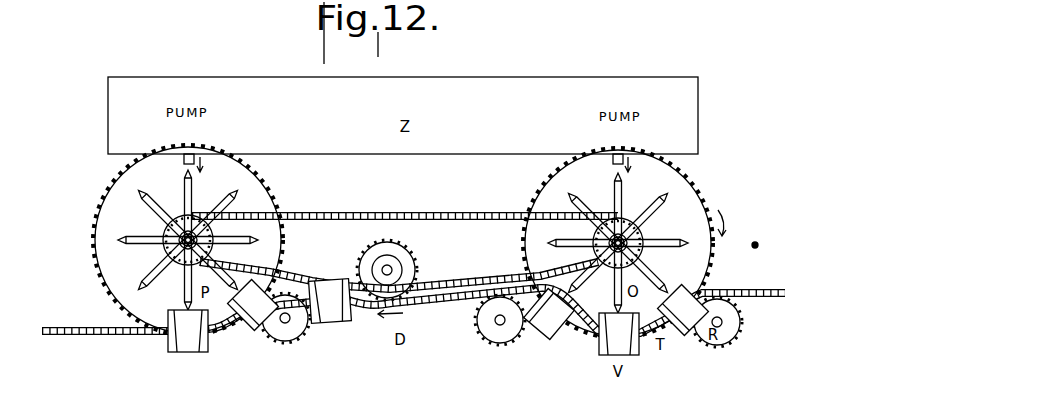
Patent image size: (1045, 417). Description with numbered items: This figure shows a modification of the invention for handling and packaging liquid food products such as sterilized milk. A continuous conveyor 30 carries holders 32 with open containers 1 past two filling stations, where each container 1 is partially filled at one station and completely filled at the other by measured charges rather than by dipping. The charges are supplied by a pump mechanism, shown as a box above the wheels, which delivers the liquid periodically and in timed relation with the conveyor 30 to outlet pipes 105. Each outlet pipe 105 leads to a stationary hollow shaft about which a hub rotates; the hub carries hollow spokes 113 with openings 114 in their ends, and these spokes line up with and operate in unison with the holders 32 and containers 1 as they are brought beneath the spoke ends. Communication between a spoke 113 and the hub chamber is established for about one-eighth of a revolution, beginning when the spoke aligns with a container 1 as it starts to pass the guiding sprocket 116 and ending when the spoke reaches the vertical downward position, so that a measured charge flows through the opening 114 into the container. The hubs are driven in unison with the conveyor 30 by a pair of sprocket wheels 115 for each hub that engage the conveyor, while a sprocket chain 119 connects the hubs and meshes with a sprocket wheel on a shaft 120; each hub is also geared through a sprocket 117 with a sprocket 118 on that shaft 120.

The container 1 is at (188, 340).
The continuous conveyor 30 is at (112, 333).
The holder 32 is at (214, 344).
The outlet pipe 105 is at (182, 161).
The hollow spoke 113 is at (194, 191).
The opening 114 is at (228, 202).
The sprocket wheel 115 is at (106, 220).
The guiding sprocket 116 is at (268, 342).
The sprocket 117 is at (393, 243).
The sprocket 118 is at (385, 282).
The sprocket chain 119 is at (392, 212).
The shaft 120 is at (392, 268).